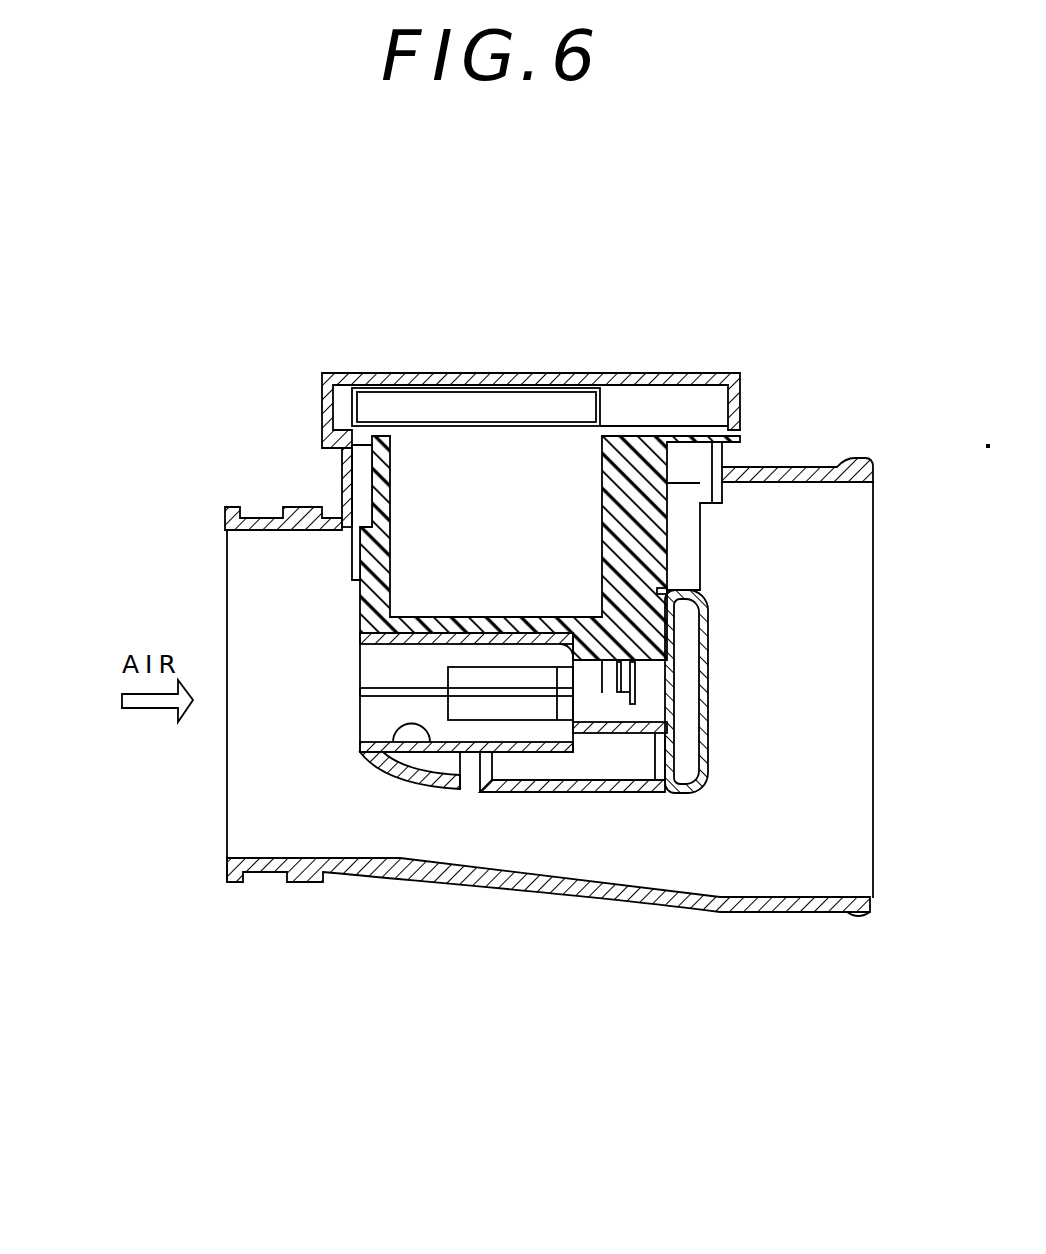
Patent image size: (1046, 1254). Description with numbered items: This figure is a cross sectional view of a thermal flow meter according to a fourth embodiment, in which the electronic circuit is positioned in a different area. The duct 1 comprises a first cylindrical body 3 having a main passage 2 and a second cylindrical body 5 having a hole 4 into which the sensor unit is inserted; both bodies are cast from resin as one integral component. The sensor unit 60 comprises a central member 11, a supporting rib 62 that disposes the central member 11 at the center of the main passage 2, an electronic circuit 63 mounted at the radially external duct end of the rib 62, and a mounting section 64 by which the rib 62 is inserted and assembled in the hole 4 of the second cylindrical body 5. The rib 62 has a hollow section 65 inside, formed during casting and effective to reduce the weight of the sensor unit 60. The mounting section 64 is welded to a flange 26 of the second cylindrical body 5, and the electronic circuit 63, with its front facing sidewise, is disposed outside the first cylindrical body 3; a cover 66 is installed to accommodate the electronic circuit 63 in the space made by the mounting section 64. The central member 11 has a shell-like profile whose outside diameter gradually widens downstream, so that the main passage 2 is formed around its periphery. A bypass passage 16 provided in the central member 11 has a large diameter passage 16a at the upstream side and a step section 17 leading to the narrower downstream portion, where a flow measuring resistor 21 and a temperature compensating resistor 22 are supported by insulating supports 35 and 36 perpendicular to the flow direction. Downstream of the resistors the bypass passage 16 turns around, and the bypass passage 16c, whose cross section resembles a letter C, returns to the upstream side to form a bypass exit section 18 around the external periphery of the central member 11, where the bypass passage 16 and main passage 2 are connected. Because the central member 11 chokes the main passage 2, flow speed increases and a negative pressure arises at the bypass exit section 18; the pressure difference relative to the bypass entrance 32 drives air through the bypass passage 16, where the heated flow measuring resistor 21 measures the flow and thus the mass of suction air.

The duct 1 is at (220, 601).
The main passage 2 is at (293, 592).
The first cylindrical body 3 is at (820, 466).
The hole 4 is at (361, 470).
The second cylindrical body 5 is at (340, 480).
The central member 11 is at (418, 788).
The bypass passage 16 is at (538, 708).
The large diameter passage 16a is at (380, 756).
The bypass passage 16c is at (562, 741).
The step section 17 is at (588, 760).
The bypass exit section 18 is at (473, 790).
The flow measuring resistor 21 is at (622, 707).
The temperature compensating resistor 22 is at (650, 703).
The flange 26 is at (736, 461).
The bypass entrance 32 is at (358, 655).
The insulating support 35 is at (610, 648).
The insulating support 36 is at (640, 692).
The sensor unit 60 is at (345, 370).
The supporting rib 62 is at (658, 558).
The electronic circuit 63 is at (572, 408).
The mounting section 64 is at (695, 436).
The hollow section 65 is at (512, 478).
The cover 66 is at (455, 376).